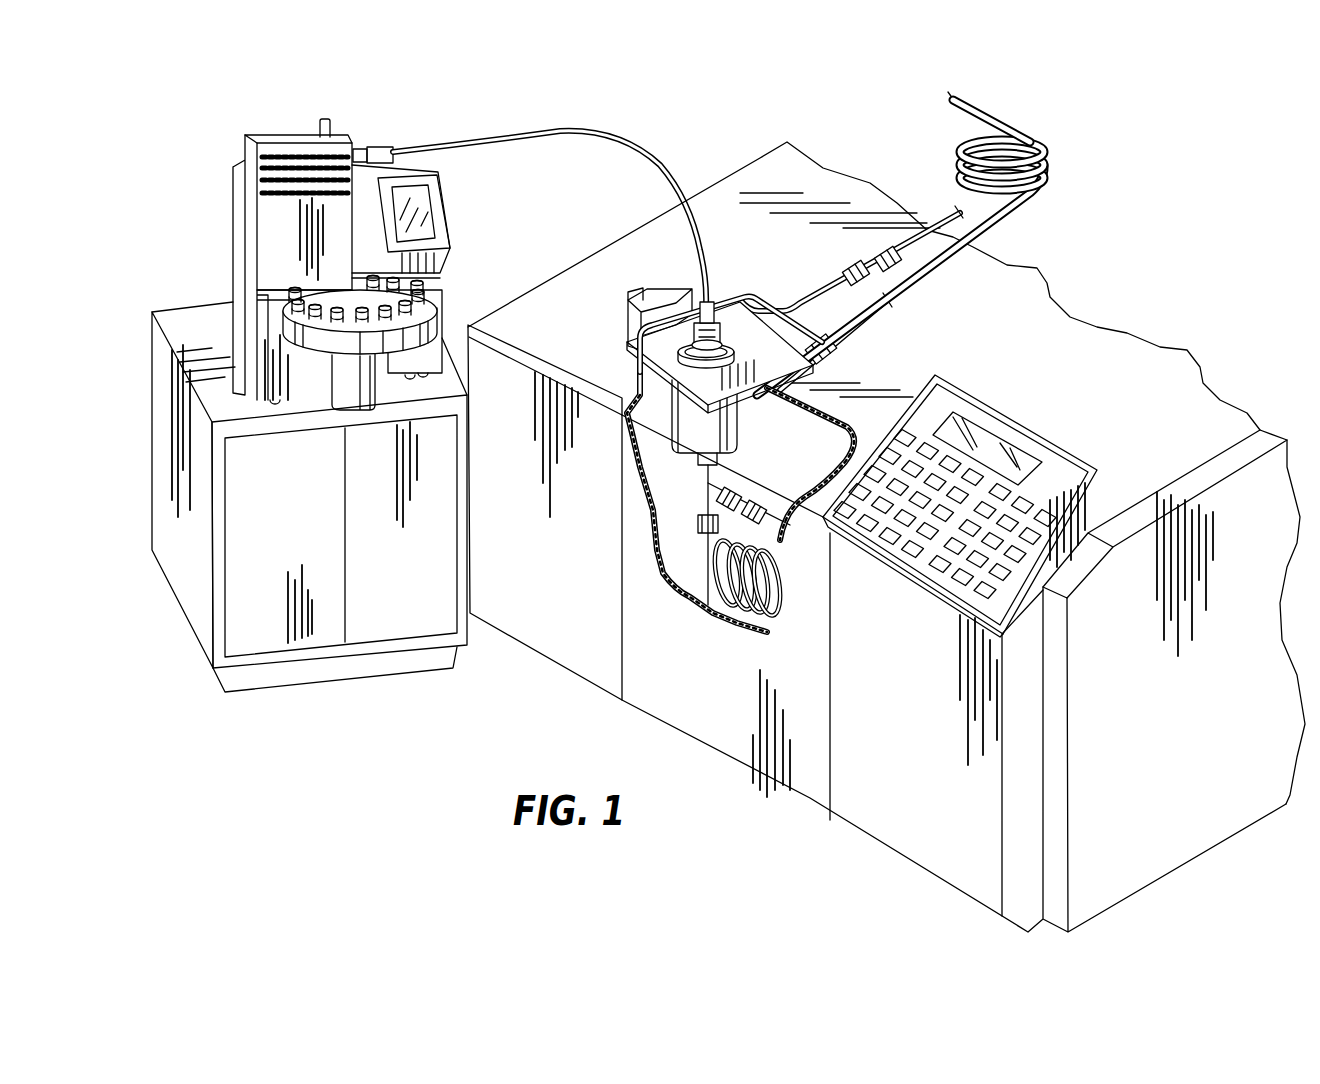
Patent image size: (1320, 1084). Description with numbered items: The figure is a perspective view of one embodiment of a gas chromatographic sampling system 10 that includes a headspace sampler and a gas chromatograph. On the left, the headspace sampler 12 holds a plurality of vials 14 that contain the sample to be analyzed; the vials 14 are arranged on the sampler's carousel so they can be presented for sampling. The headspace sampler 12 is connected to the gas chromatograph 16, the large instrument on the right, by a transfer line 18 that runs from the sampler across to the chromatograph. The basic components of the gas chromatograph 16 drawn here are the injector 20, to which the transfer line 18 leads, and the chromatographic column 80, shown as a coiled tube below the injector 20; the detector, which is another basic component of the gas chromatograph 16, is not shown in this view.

The gas chromatographic sampling system 10 is at (685, 150).
The headspace sampler 12 is at (243, 258).
The vials 14 is at (437, 316).
The gas chromatograph 16 is at (1102, 335).
The transfer line 18 is at (480, 133).
The injector 20 is at (735, 433).
The chromatographic column 80 is at (716, 620).